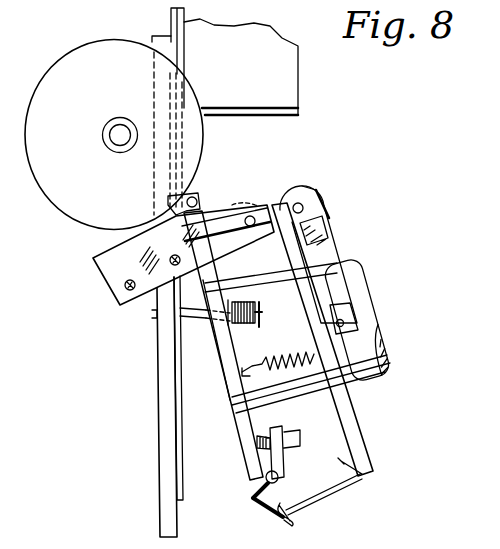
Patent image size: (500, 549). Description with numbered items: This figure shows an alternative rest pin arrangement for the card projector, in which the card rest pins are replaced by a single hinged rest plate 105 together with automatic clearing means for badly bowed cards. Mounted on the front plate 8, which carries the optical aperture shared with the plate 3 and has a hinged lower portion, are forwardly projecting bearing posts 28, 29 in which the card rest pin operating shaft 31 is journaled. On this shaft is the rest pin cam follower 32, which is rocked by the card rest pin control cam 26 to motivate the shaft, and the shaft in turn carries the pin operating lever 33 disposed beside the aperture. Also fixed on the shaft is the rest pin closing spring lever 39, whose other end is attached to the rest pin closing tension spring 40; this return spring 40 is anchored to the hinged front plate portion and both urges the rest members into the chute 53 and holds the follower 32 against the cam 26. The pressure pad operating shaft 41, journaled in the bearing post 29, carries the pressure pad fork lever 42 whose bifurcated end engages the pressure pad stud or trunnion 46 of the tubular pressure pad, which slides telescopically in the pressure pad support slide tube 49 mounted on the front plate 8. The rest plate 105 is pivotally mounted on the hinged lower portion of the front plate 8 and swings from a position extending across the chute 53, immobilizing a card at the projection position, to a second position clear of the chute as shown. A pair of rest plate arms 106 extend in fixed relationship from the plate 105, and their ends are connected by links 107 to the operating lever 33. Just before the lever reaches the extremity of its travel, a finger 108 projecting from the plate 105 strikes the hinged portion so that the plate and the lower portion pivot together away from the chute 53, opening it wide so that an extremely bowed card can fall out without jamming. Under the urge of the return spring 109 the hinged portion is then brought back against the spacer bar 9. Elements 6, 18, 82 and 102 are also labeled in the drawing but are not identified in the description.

The plate 3 is at (163, 457).
The table 6 is at (298, 97).
The front plate 8 is at (195, 198).
The spacer bar 9 is at (177, 420).
The hub 18 is at (110, 141).
The card rest pin control cam 26 is at (66, 210).
The bearing post 28 is at (265, 213).
The bearing post 29 is at (326, 197).
The card rest pin operating shaft 31 is at (249, 216).
The rest pin cam follower 32 is at (118, 252).
The pin operating lever 33 is at (341, 418).
The rest pin closing spring lever 39 is at (305, 226).
The rest pin closing tension spring 40 is at (276, 352).
The pressure pad operating shaft 41 is at (297, 203).
The pressure pad fork lever 42 is at (330, 245).
The pressure pad stud or trunnion 46 is at (358, 322).
The pressure pad support slide tube 49 is at (365, 380).
The chute 53 is at (193, 401).
The bar 82 is at (238, 432).
The slot 102 is at (205, 143).
The rest plate 105 is at (262, 489).
The rest plate arm 106 is at (278, 512).
The link 107 is at (316, 498).
The finger 108 is at (262, 437).
The return spring 109 is at (233, 300).